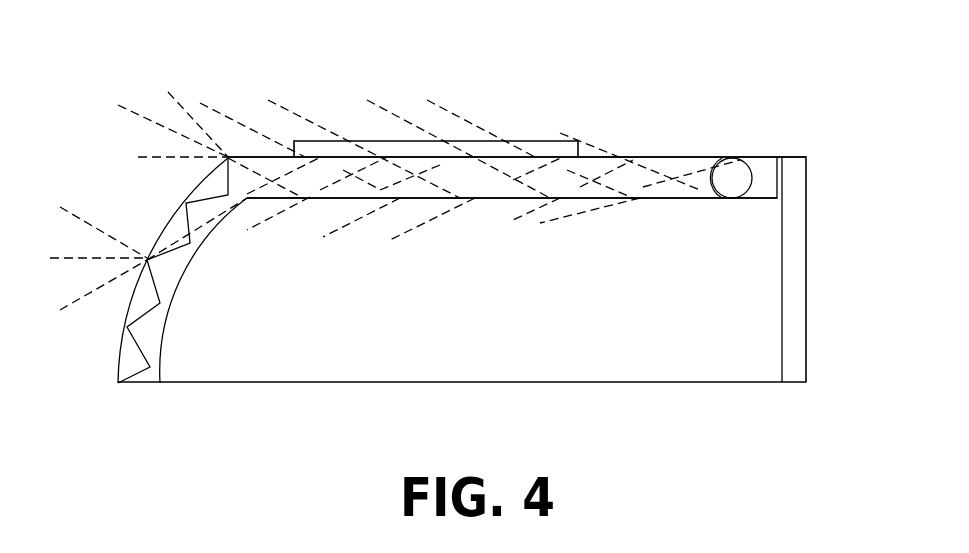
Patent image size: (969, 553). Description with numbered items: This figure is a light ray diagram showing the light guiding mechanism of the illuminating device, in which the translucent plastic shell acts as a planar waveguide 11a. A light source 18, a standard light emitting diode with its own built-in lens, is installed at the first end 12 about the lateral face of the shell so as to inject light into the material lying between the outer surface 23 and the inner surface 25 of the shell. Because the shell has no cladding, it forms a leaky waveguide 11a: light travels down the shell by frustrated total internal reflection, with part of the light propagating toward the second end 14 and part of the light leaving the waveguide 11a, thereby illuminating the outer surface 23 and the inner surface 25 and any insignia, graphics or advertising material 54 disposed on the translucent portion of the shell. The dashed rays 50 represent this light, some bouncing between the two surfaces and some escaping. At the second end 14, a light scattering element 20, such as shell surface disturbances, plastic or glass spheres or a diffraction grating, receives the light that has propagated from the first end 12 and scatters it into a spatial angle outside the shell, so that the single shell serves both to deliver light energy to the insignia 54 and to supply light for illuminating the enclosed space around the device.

The planar waveguide 11a is at (642, 185).
The first end 12 is at (837, 330).
The second end 14 is at (100, 342).
The light source 18 is at (728, 172).
The light scattering element 20 is at (144, 365).
The outer surface 23 is at (272, 157).
The inner surface 25 is at (497, 200).
The light rays 50 is at (147, 120).
The insignia or graphics or advertising material 54 is at (435, 137).